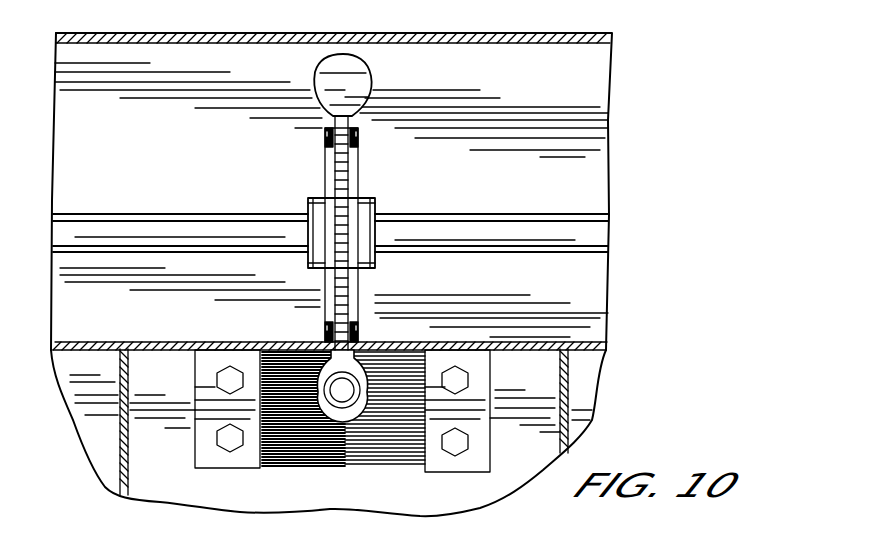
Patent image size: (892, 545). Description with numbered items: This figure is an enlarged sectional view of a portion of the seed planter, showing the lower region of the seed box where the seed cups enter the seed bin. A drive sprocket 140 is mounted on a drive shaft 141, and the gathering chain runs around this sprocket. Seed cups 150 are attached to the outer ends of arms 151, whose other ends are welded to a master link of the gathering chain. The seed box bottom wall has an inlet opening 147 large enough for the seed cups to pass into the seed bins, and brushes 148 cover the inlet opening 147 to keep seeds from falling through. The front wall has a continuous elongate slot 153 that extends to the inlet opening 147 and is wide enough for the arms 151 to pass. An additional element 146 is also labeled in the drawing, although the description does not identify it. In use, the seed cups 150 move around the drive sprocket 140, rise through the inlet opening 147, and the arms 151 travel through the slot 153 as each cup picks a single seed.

The drive sprocket 140 is at (347, 226).
The drive shaft 141 is at (572, 217).
The sleeve 146 is at (330, 163).
The inlet opening 147 is at (312, 456).
The brushes 148 is at (377, 457).
The seed cups 150 is at (370, 78).
The arms 151 is at (355, 118).
The slot 153 is at (352, 347).